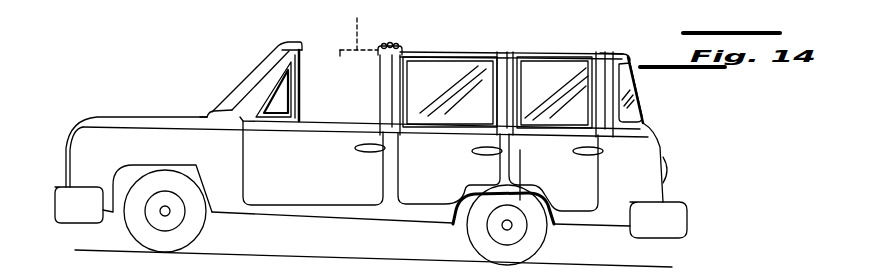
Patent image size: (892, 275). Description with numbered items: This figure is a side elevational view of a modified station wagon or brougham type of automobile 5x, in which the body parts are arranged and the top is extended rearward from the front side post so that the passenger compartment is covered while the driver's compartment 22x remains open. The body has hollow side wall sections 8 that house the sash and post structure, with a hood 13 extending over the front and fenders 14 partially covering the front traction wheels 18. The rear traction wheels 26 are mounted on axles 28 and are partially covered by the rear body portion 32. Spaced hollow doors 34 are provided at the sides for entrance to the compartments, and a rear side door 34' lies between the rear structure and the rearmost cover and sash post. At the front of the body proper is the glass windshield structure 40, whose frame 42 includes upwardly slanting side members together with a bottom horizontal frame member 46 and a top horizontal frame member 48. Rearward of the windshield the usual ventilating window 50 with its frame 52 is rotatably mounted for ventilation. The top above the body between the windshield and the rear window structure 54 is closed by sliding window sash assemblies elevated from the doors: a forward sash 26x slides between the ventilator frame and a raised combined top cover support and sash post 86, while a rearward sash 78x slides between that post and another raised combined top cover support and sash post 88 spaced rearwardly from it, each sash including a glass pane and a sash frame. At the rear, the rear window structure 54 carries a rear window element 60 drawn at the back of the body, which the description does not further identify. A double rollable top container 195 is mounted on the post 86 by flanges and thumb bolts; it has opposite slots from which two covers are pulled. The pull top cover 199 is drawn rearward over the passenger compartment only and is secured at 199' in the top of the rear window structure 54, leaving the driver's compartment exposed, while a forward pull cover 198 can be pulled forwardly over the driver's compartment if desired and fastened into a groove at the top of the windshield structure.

The modified station wagon or brougham type of automobile 5x is at (247, 65).
The hollow side wall section 8 is at (226, 179).
The hood 13 is at (125, 123).
The fender 14 is at (107, 152).
The front traction wheel 18 is at (188, 227).
The driver's compartment 22x is at (313, 163).
The rear traction wheel 26 is at (532, 238).
The window sash assembly 26x is at (410, 67).
The axle 28 is at (505, 226).
The rear body portion 32 is at (598, 218).
The hollow door 34 is at (444, 172).
The rear side door 34' is at (545, 175).
The glass windshield structure 40 is at (245, 70).
The windshield frame 42 is at (254, 92).
The bottom horizontal frame member 46 is at (204, 114).
The top horizontal frame member 48 is at (285, 43).
The ventilating window 50 is at (277, 92).
The ventilating window frame 52 is at (298, 100).
The rear window structure 54 is at (648, 105).
The rear window 60 is at (629, 58).
The window sash assembly 78x is at (520, 72).
The raised combined top cover support and sash post 86 is at (385, 97).
The raised combined top cover support and sash post 88 is at (510, 55).
The double rollable top container 195 is at (388, 43).
The forward pull cover 198 is at (359, 28).
The pull top cover 199 is at (515, 38).
The securing point of pull cover 199' is at (625, 37).